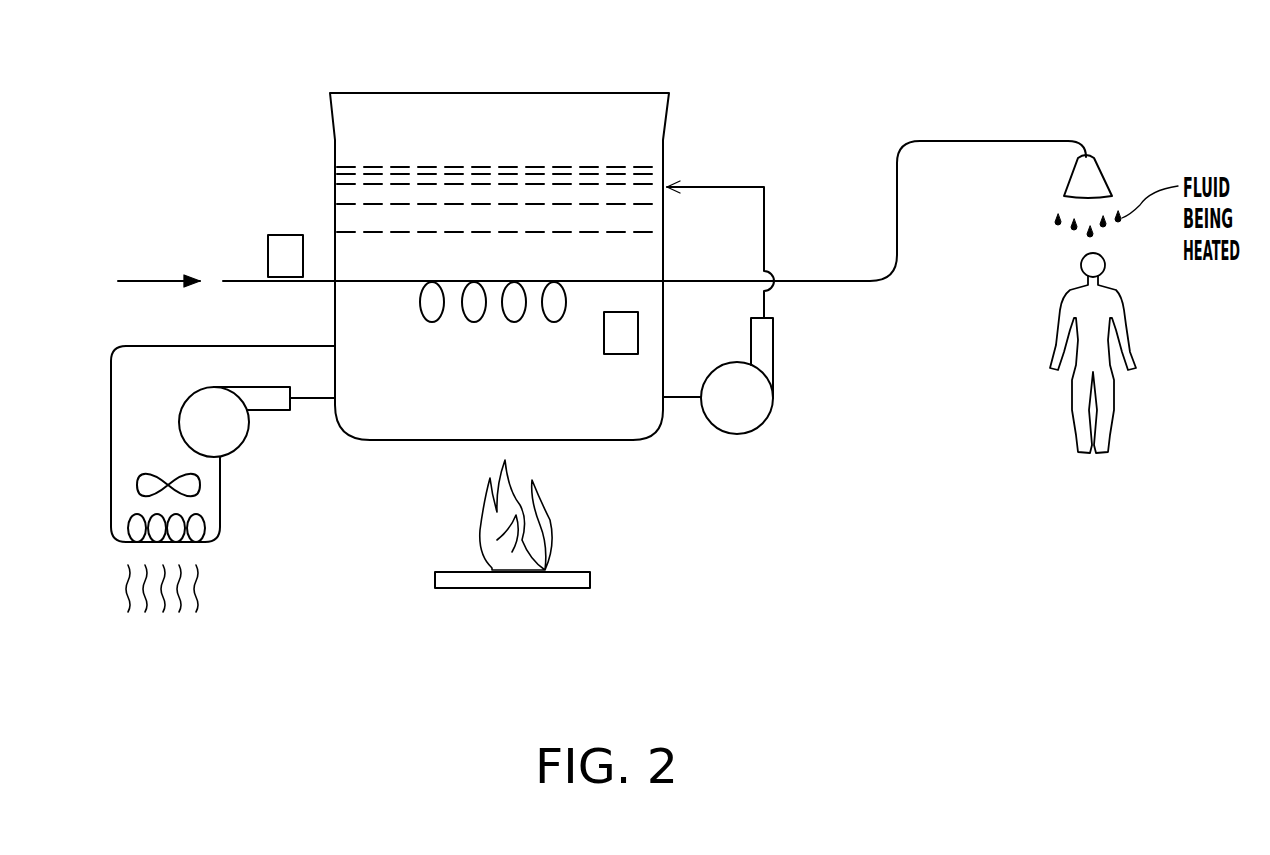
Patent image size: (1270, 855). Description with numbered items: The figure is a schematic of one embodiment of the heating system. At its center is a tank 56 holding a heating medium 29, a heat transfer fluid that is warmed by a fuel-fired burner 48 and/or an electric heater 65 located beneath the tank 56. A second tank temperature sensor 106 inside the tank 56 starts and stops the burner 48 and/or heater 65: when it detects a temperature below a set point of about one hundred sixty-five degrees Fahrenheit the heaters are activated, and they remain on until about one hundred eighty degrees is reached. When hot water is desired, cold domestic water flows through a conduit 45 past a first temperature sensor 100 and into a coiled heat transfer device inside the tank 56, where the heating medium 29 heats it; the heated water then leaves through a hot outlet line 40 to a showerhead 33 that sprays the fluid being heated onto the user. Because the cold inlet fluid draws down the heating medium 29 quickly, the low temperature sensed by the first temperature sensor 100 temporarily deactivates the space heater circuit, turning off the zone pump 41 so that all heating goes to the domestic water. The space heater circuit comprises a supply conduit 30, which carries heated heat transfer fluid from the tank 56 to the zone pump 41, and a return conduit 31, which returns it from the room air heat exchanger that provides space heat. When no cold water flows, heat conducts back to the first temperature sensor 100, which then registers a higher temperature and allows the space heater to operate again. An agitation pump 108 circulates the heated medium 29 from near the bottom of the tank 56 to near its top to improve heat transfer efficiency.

The heating medium 29 is at (483, 167).
The tank 56 is at (420, 440).
The conduit 45 is at (247, 283).
The first temperature sensor 100 is at (289, 220).
The return conduit 31 is at (111, 390).
The zone pump 41 is at (186, 405).
The supply conduit 30 is at (312, 398).
The fuel-fired burner 48 is at (614, 544).
The electric heater 65 is at (553, 528).
The second tank temperature sensor 106 is at (630, 354).
The agitation pump 108 is at (763, 390).
The hot outlet conduit 40 is at (1010, 140).
The showerhead 33 is at (1105, 172).